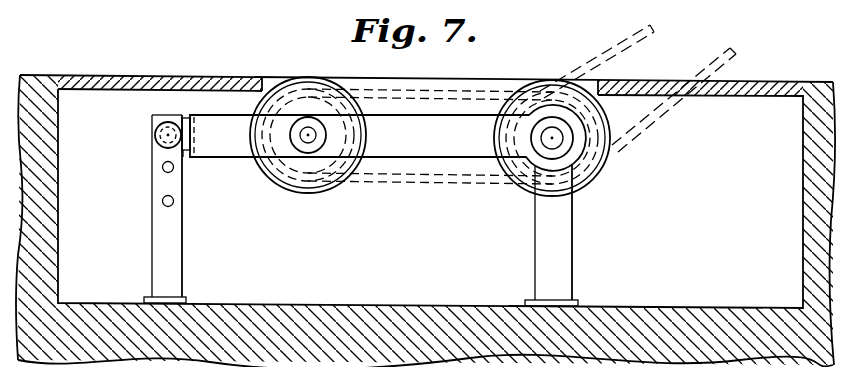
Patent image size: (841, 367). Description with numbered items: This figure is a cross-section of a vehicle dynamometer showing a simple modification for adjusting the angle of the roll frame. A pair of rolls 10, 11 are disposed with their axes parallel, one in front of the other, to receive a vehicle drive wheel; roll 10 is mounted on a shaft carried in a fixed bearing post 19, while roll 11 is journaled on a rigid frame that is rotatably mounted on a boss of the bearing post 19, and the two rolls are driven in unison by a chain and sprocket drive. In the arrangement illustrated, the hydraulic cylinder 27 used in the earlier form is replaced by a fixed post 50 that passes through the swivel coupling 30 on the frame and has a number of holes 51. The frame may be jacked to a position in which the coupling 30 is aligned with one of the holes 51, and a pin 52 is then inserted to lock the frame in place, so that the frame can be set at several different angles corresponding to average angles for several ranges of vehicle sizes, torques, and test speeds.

The roll 10 is at (538, 86).
The roll 11 is at (308, 83).
The bearing post 19 is at (562, 223).
The hydraulic cylinder 27 is at (412, 145).
The swivel coupling 30 is at (183, 153).
The fixed post 50 is at (175, 235).
The holes 51 is at (141, 184).
The pin 52 is at (155, 135).